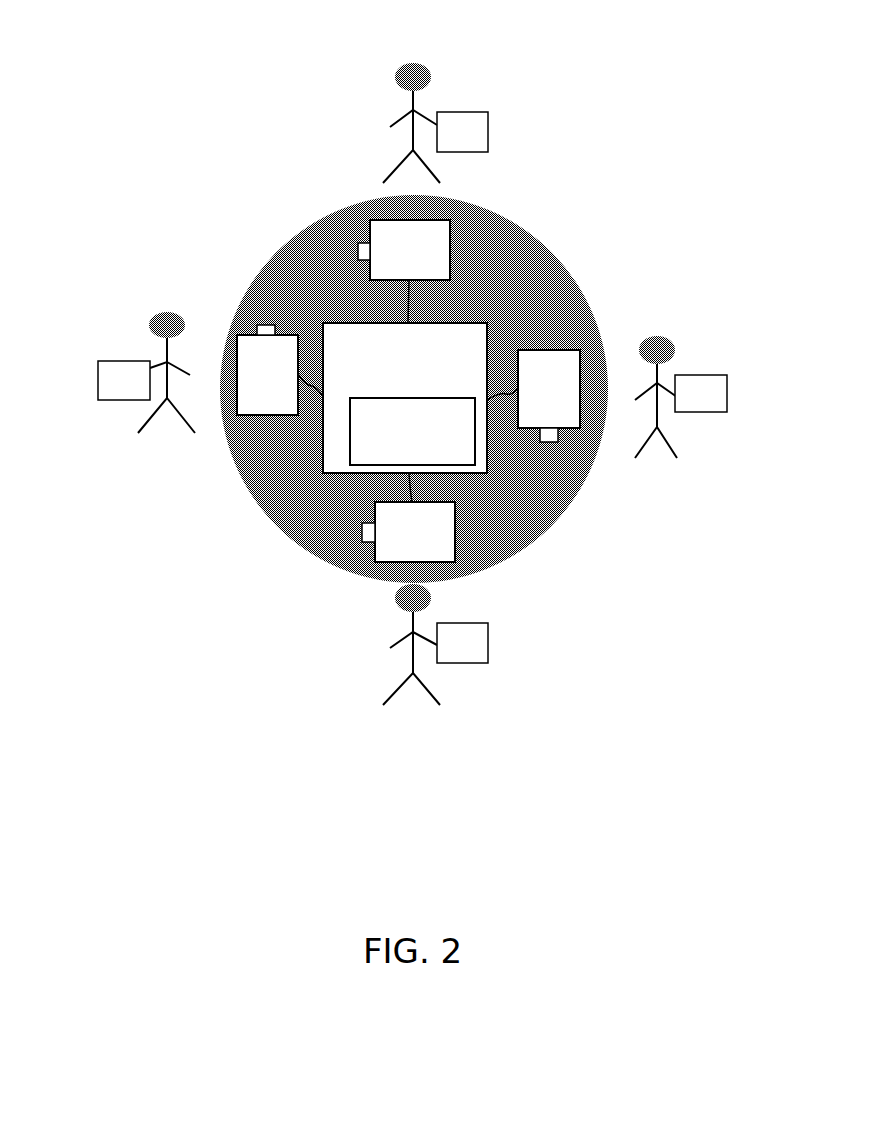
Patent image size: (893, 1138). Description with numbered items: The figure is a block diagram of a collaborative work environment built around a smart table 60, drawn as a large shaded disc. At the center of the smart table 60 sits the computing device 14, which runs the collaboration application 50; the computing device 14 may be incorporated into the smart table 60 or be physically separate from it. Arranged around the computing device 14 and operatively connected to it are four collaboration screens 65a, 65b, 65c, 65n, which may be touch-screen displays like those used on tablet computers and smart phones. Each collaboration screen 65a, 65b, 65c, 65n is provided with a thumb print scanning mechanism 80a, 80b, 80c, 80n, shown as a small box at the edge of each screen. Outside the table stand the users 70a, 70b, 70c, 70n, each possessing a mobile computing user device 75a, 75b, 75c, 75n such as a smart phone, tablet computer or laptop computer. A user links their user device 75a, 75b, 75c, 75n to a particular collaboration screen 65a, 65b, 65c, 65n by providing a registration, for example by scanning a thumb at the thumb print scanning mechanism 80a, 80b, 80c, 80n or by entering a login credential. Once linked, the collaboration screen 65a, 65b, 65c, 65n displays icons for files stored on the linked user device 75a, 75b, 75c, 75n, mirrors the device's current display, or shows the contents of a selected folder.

The computing device 14 is at (460, 384).
The collaboration application 50 is at (455, 461).
The smart table 60 is at (290, 546).
The collaboration screen 65a is at (455, 548).
The collaboration screen 65b is at (580, 350).
The collaboration screen 65c is at (450, 237).
The collaboration screen 65n is at (237, 415).
The user 70a is at (360, 698).
The user 70b is at (701, 330).
The user 70c is at (464, 66).
The user 70n is at (116, 442).
The user device 75a is at (483, 655).
The user device 75b is at (680, 406).
The user device 75c is at (483, 144).
The user device 75n is at (103, 393).
The thumb print scanning mechanism 80a is at (363, 543).
The thumb print scanning mechanism 80b is at (558, 442).
The thumb print scanning mechanism 80c is at (358, 243).
The thumb print scanning mechanism 80n is at (260, 325).